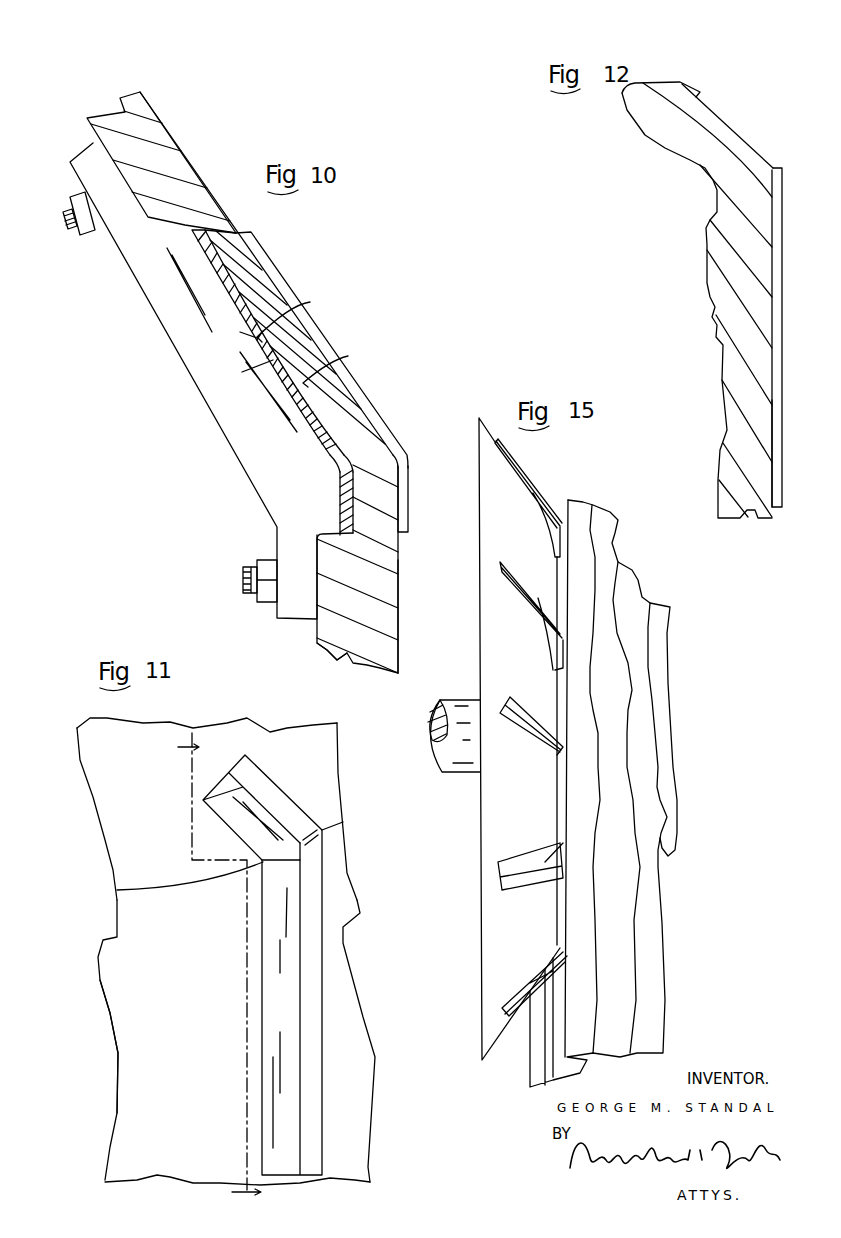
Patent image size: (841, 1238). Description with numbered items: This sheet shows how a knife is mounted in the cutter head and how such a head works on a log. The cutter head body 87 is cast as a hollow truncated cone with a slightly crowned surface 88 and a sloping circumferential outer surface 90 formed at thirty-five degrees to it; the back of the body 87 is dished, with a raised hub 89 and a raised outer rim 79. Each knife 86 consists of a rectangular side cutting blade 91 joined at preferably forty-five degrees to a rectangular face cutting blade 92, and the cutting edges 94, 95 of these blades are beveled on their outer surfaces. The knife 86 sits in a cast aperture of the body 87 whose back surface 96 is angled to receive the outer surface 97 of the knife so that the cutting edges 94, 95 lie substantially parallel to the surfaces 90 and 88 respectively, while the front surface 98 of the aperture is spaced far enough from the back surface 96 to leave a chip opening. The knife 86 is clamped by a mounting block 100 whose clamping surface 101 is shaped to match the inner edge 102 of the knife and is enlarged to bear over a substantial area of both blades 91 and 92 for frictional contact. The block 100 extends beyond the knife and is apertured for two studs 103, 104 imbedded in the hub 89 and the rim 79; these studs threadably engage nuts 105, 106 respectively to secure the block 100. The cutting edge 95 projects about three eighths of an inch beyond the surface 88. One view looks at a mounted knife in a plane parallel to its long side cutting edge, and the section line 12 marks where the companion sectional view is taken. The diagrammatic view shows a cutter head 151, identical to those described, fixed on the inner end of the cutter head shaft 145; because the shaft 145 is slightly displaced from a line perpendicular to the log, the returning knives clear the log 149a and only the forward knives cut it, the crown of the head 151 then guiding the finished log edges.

In FIG. 10, the raised outer rim 79 is at (112, 127).
In FIG. 10, the knife 86 is at (326, 436).
In FIG. 10, the cutter head body 87 is at (388, 574).
In FIG. 12, the cutter head body 87 is at (727, 268).
In FIG. 11, the cutter head body 87 is at (122, 1157).
In FIG. 10, the crowned surface 88 is at (399, 622).
In FIG. 12, the crowned surface 88 is at (684, 84).
In FIG. 11, the crowned surface 88 is at (163, 819).
In FIG. 10, the raised hub 89 is at (328, 622).
In FIG. 10, the sloping circumferential outer surface 90 is at (194, 170).
In FIG. 12, the sloping circumferential outer surface 90 is at (773, 425).
In FIG. 11, the sloping circumferential outer surface 90 is at (192, 1028).
In FIG. 10, the side cutting blade 91 is at (219, 266).
In FIG. 10, the face cutting blade 92 is at (343, 492).
In FIG. 10, the cutting edge 94 is at (383, 423).
In FIG. 12, the cutting edge 94 is at (781, 352).
In FIG. 11, the cutting edge 94 is at (302, 1093).
In FIG. 10, the cutting edge 95 is at (410, 488).
In FIG. 12, the cutting edge 95 is at (748, 145).
In FIG. 11, the cutting edge 95 is at (243, 838).
In FIG. 10, the back surface 96 is at (337, 366).
In FIG. 10, the outer surface 97 is at (245, 372).
In FIG. 11, the front surface 98 is at (295, 1013).
In FIG. 10, the mounting block 100 is at (285, 450).
In FIG. 10, the clamping surface 101 is at (240, 334).
In FIG. 10, the inner edge 102 is at (299, 318).
In FIG. 10, the stud 103 is at (70, 230).
In FIG. 10, the stud 104 is at (243, 585).
In FIG. 10, the nut 105 is at (95, 228).
In FIG. 10, the nut 106 is at (265, 560).
In FIG. 11, the section line 12— 12 is at (228, 972).
In FIG. 15, the cutter head shaft 145 is at (442, 753).
In FIG. 15, the log 149a is at (653, 767).
In FIG. 15, the cutter head 151 is at (487, 988).